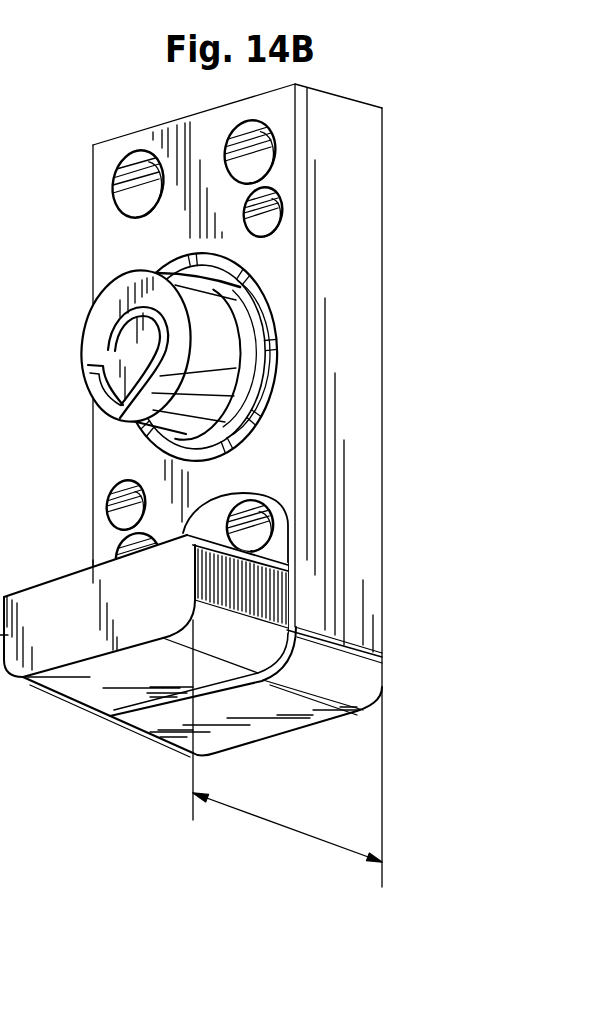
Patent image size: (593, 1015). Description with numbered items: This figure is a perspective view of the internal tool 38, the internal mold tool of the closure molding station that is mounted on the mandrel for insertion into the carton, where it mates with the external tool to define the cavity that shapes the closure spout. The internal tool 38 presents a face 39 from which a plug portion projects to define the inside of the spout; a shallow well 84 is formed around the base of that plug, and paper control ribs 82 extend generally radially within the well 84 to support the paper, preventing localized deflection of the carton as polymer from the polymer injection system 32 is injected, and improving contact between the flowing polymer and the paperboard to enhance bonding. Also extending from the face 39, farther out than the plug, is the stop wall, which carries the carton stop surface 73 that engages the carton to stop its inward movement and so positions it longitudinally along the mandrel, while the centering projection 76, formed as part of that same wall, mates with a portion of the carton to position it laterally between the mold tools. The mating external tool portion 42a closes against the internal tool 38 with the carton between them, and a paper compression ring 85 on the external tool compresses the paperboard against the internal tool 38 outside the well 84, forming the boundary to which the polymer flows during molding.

The internal tool 38 is at (107, 233).
The paper control ribs 82 is at (250, 268).
The polymer injection system 32 is at (103, 350).
The face 39 is at (103, 418).
The well 84 is at (270, 347).
The centering projection 76 is at (250, 495).
The carton stop surface 73 is at (43, 583).
The external tool portion 42a is at (0, 797).
The paper compression ring 85 is at (0, 983).